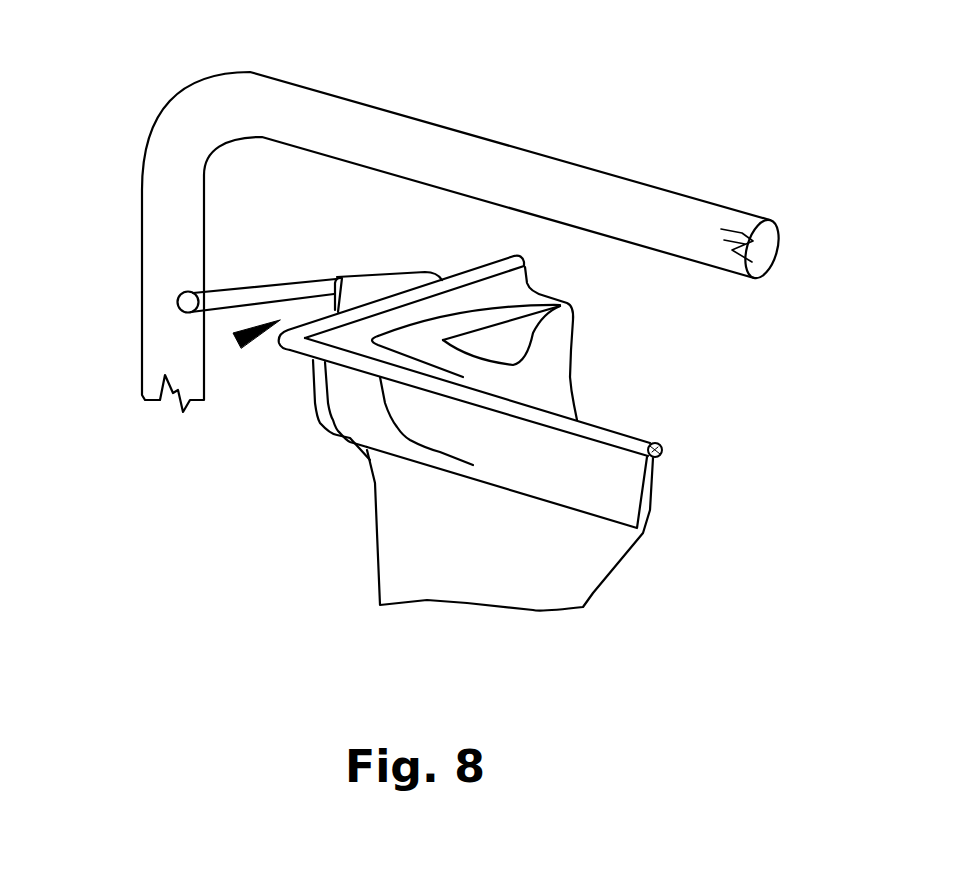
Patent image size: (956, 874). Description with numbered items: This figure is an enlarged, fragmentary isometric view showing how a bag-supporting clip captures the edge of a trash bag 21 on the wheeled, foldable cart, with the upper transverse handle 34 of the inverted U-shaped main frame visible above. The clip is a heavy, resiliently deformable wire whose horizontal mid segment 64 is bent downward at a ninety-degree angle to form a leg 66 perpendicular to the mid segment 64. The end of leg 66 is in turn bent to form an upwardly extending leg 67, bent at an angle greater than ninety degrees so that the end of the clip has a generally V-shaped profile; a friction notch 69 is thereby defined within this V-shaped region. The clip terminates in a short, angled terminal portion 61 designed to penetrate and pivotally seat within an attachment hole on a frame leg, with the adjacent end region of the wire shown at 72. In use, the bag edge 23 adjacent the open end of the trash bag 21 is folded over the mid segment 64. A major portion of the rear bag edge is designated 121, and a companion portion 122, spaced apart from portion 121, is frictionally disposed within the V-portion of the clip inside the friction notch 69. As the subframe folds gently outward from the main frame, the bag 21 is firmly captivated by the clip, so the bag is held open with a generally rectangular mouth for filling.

The upper transverse handle 34 is at (550, 177).
The terminal portion 61 is at (185, 315).
The upwardly extending leg 67 is at (258, 297).
The rounded rod end 72 is at (173, 300).
The friction notch 69 is at (238, 337).
The leg 66 is at (458, 277).
The companion portion 122 is at (363, 287).
The horizontal mid segment 64 is at (598, 430).
The bag edge 23 is at (607, 493).
The trash bag 21 is at (452, 572).
The rear bag edge portion 121 is at (363, 407).